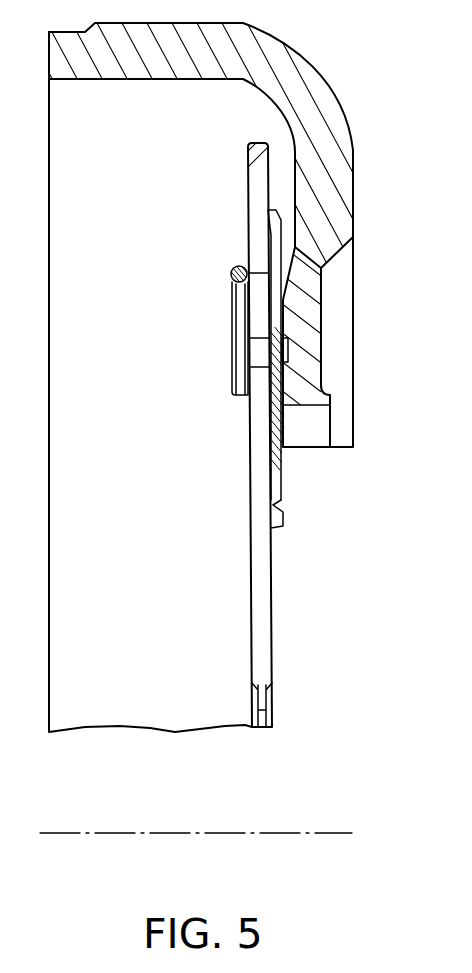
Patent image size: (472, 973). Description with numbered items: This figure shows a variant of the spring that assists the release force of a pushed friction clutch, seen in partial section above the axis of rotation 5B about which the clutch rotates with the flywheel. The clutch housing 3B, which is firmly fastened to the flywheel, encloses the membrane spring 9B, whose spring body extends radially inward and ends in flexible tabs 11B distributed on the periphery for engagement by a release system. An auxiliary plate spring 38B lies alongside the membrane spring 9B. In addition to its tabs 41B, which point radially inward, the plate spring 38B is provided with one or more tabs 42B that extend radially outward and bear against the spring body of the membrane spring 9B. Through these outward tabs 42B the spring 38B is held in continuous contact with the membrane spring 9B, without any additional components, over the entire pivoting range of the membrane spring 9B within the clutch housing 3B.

The clutch housing 3B is at (305, 80).
The membrane spring 9B is at (252, 178).
The flexible tabs 11B is at (269, 687).
The tabs 42B is at (270, 240).
The membrane spring/plate spring 38B is at (289, 355).
The tabs 41B is at (283, 505).
The axis of rotation 5B is at (172, 830).